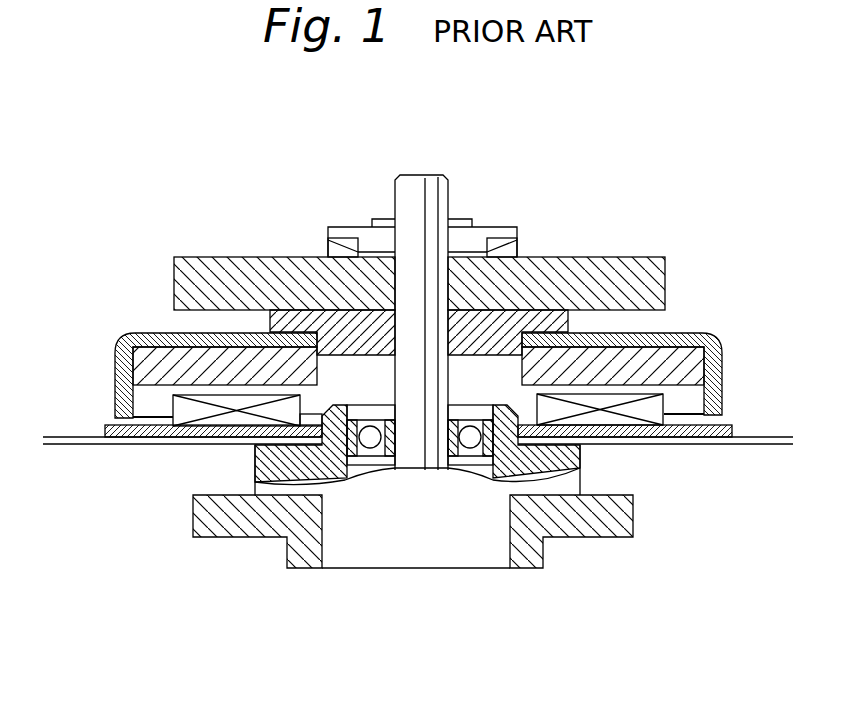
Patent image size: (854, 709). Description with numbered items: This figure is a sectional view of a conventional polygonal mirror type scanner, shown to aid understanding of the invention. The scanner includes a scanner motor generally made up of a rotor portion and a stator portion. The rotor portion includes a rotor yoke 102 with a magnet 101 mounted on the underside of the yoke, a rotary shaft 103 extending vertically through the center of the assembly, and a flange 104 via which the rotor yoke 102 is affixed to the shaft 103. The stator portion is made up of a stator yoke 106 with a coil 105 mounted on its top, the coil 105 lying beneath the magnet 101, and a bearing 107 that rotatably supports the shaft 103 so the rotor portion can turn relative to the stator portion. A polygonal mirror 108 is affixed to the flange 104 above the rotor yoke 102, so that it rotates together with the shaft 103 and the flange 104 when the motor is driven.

The magnet 101 is at (155, 370).
The rotor yoke 102 is at (162, 340).
The rotary shaft 103 is at (447, 192).
The flange 104 is at (540, 325).
The coil 105 is at (660, 403).
The stator yoke 106 is at (603, 438).
The bearing 107 is at (370, 432).
The polygonal mirror 108 is at (650, 266).